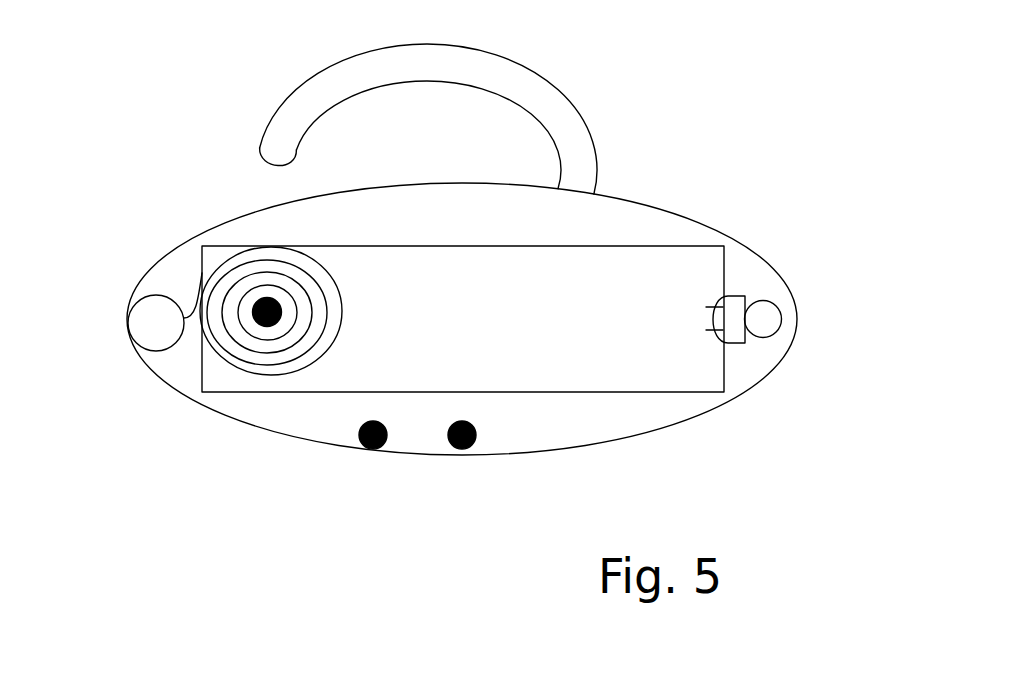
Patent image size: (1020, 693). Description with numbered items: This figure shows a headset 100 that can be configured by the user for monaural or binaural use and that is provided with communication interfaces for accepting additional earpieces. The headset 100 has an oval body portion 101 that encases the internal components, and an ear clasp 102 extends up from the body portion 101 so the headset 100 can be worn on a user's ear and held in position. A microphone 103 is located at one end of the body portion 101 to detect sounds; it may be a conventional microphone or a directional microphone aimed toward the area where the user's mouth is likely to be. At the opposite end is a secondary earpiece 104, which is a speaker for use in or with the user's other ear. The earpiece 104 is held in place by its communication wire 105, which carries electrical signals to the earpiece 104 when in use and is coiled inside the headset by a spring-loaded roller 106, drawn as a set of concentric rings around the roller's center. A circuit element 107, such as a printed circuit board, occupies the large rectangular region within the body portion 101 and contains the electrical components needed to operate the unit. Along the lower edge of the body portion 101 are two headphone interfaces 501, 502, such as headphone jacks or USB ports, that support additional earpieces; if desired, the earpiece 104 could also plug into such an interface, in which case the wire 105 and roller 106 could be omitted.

The headset 100 is at (459, 233).
The body portion 101 is at (432, 314).
The ear clasp 102 is at (498, 107).
The microphone 103 is at (797, 276).
The secondary earpiece 104 is at (117, 365).
The communication wire 105 is at (225, 374).
The spring-loaded roller 106 is at (269, 410).
The circuit element 107 is at (540, 372).
The headphone interface 501 is at (417, 481).
The headphone interface 502 is at (509, 480).